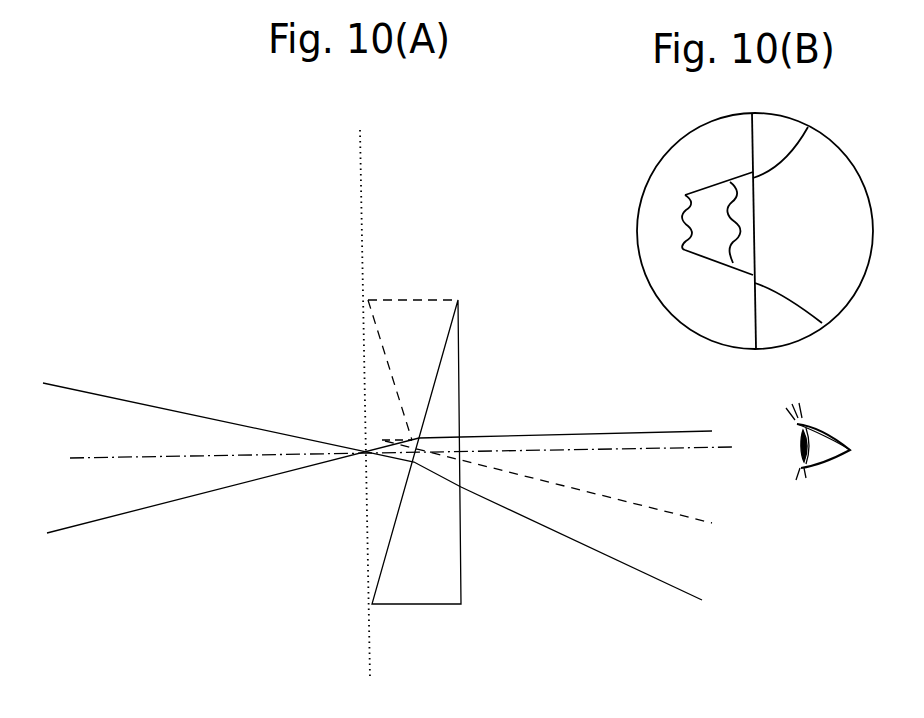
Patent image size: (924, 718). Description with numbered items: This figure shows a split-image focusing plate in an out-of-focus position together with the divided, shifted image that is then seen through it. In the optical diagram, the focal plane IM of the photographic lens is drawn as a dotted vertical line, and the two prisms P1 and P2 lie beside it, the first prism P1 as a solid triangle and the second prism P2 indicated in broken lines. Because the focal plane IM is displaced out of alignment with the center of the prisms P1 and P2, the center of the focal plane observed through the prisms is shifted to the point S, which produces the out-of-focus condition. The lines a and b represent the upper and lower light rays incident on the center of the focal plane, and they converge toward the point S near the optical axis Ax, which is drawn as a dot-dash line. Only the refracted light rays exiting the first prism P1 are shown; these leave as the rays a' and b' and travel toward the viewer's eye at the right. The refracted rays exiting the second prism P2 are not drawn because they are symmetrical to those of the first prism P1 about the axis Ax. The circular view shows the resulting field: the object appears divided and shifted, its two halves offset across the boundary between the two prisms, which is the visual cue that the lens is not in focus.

The focal plane IM is at (360, 193).
The prism P1 is at (461, 323).
The prism P2 is at (377, 327).
The axis Ax is at (110, 458).
The point S is at (376, 446).
The upper light ray a is at (243, 428).
The lower light ray b is at (245, 491).
The refracted upper light ray a' is at (593, 550).
The refracted lower light ray b' is at (560, 470).